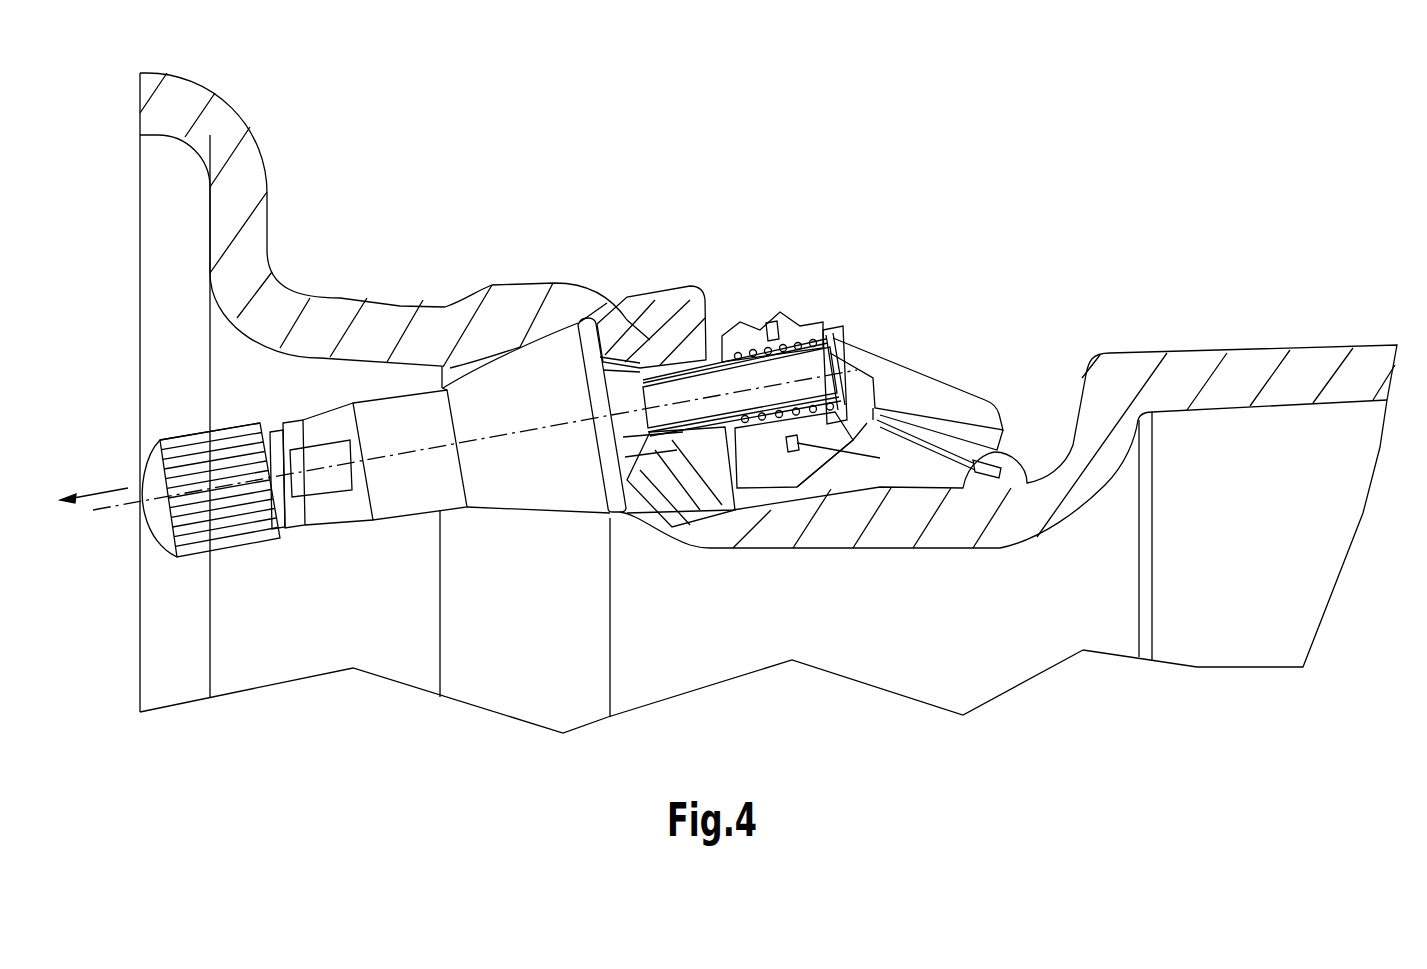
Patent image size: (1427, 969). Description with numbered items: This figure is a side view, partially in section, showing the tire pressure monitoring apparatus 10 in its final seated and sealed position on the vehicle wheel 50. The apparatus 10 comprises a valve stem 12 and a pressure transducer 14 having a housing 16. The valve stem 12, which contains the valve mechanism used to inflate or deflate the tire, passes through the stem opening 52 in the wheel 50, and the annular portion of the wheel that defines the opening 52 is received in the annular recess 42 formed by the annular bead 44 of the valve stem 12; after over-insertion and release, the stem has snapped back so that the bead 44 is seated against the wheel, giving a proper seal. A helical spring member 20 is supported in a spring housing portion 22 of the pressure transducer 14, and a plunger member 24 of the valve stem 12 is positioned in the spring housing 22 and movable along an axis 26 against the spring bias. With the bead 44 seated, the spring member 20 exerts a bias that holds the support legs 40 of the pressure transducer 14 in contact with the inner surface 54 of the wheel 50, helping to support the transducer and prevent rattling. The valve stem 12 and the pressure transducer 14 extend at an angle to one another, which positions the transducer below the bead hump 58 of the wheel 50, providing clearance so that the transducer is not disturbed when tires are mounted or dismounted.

The tire pressure monitoring apparatus 10 is at (534, 547).
The valve stem 12 is at (535, 387).
The pressure transducer 14 is at (910, 397).
The housing 16 is at (972, 400).
The spring member 20 is at (740, 350).
The spring housing portion 22 is at (798, 335).
The plunger member 24 is at (873, 422).
The axis 26 is at (100, 514).
The support legs 40 is at (775, 465).
The annular recess 42 is at (645, 520).
The annular bead 44 is at (627, 528).
The vehicle wheel 50 is at (1240, 380).
The stem opening 52 is at (647, 313).
The inner surface 54 is at (1025, 481).
The bead hump 58 is at (490, 282).